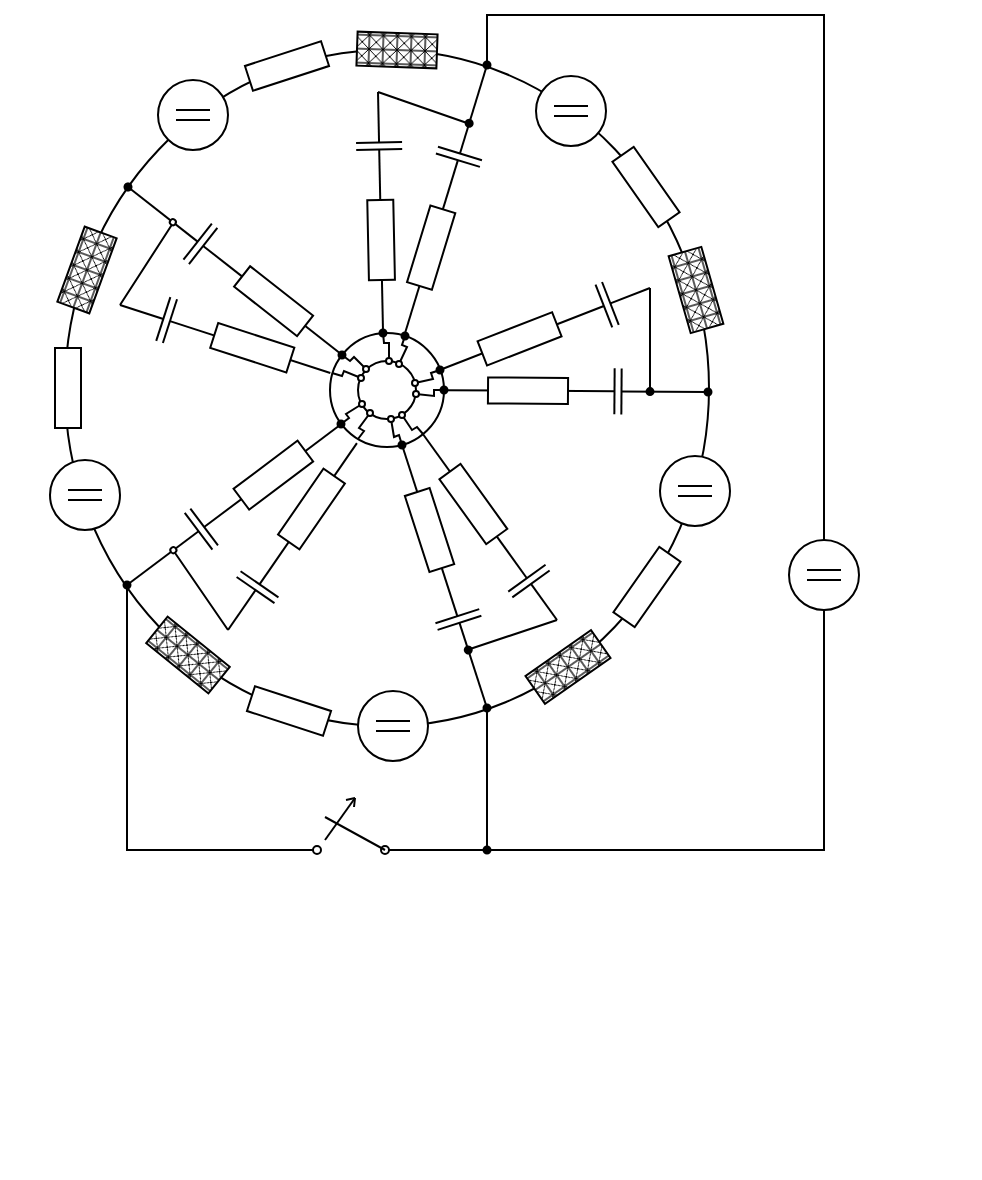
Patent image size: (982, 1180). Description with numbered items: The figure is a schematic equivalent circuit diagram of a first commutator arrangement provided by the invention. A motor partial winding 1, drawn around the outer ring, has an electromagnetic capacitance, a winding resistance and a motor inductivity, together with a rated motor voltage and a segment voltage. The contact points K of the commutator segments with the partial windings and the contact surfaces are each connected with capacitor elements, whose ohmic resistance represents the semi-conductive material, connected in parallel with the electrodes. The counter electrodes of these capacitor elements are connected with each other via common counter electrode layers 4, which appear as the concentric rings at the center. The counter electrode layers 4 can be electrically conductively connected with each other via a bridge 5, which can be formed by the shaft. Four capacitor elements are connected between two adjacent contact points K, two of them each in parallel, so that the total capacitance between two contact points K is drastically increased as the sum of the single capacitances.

The motor partial winding 1 is at (722, 122).
The common counter electrode layers 4 is at (358, 340).
The bridge 5 is at (435, 352).
The contact points K is at (128, 187).